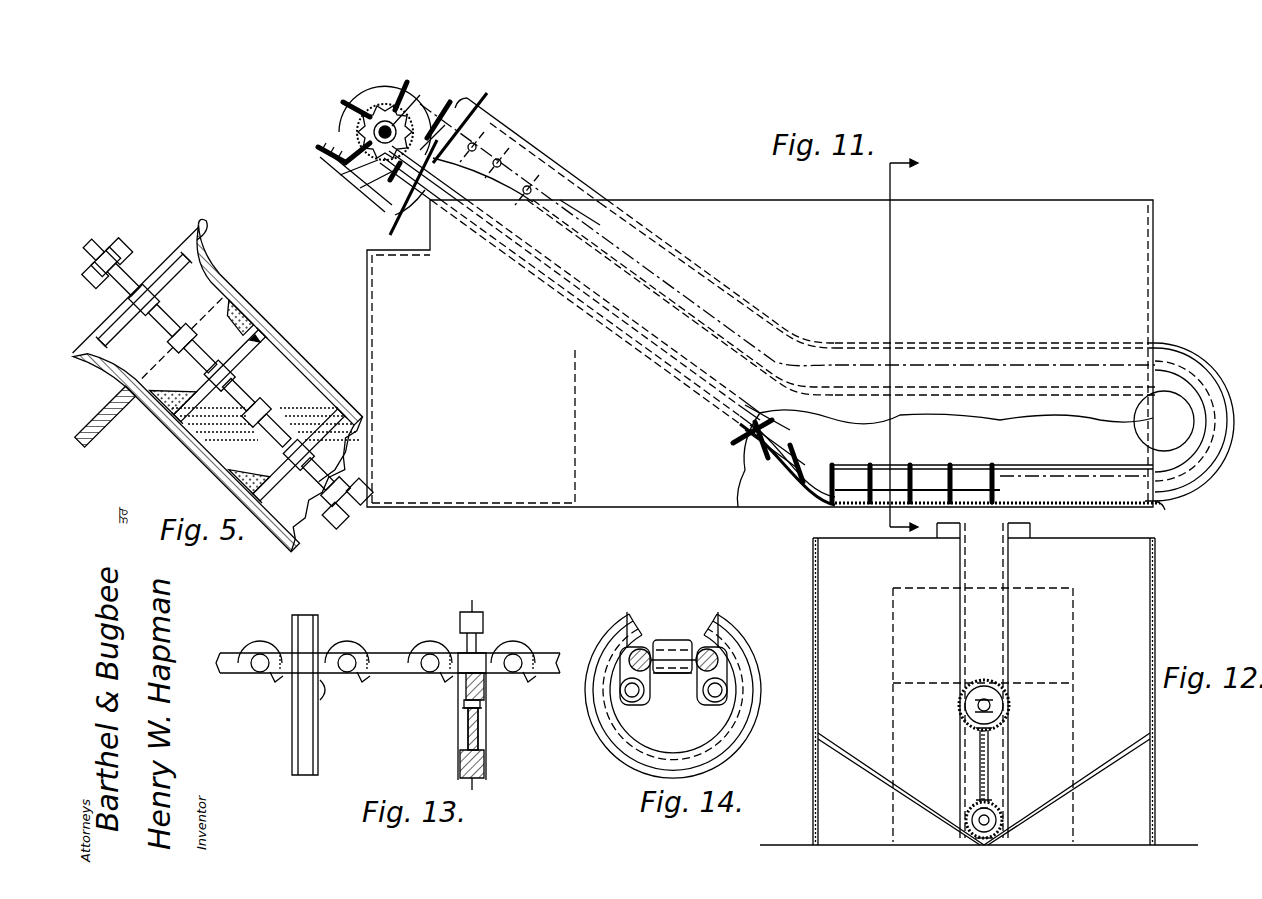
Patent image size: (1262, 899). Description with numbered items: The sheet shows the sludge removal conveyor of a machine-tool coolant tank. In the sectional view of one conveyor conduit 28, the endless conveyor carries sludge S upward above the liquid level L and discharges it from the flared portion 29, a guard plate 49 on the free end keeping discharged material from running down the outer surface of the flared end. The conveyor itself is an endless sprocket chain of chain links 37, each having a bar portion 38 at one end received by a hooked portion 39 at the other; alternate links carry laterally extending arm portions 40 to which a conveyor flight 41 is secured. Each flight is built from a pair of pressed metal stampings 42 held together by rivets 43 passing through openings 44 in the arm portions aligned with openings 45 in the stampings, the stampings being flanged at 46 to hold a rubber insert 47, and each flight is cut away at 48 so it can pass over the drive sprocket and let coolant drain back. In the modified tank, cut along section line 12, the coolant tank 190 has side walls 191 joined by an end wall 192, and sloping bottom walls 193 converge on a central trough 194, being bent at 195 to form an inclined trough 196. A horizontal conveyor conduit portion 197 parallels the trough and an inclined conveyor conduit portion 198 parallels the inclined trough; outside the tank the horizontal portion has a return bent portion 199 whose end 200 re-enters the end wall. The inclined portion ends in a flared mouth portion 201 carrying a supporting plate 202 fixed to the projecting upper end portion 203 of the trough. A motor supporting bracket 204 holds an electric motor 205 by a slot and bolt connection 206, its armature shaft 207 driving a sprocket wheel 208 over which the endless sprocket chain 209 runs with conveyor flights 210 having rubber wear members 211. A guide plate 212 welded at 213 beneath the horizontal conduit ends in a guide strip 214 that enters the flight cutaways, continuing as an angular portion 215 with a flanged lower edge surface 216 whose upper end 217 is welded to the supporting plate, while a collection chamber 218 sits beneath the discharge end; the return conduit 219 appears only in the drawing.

In FIG. 5, the conveyor conduit 28 is at (292, 338).
In FIG. 5, the flared portion 29 is at (224, 233).
In FIG. 5, the chain links 37 is at (124, 245).
In FIG. 13, the chain links 37 is at (390, 652).
In FIG. 14, the chain links 37 is at (640, 648).
In FIG. 5, the bar portion 38 is at (183, 297).
In FIG. 13, the bar portion 38 is at (428, 676).
In FIG. 14, the bar portion 38 is at (653, 650).
In FIG. 5, the hooked portion 39 is at (157, 255).
In FIG. 13, the hooked portion 39 is at (437, 642).
In FIG. 14, the hooked portion 39 is at (677, 640).
In FIG. 13, the laterally extending arm portions 40 is at (485, 675).
In FIG. 14, the laterally extending arm portions 40 is at (620, 690).
In FIG. 5, the conveyor flight 41 is at (256, 336).
In FIG. 13, the conveyor flight 41 is at (488, 732).
In FIG. 13, the pressed metal stampings 42 is at (468, 732).
In FIG. 14, the pressed metal stampings 42 is at (672, 707).
In FIG. 13, the rivets 43 is at (466, 692).
In FIG. 14, the rivets 43 is at (640, 700).
In FIG. 13, the openings 44 is at (482, 716).
In FIG. 13, the openings 45 is at (464, 714).
In FIG. 13, the flange 46 is at (460, 756).
In FIG. 14, the flange 46 is at (632, 750).
In FIG. 5, the rubber insert 47 is at (176, 432).
In FIG. 13, the rubber insert 47 is at (389, 691).
In FIG. 14, the rubber insert 47 is at (608, 740).
In FIG. 13, the cut away portion 48 is at (487, 632).
In FIG. 14, the cut away portion 48 is at (712, 620).
In FIG. 5, the guard plate 49 is at (95, 447).
In FIG. 5, the sludge S is at (158, 420).
In FIG. 5, the liquid level L is at (304, 400).
In FIG. 11, the section line 12— 12 is at (913, 345).
In FIG. 11, the coolant tank 190 is at (1158, 287).
In FIG. 12, the side walls 191 is at (818, 608).
In FIG. 11, the end wall 192 is at (1155, 320).
In FIG. 12, the sloping bottom walls 193 is at (860, 755).
In FIG. 11, the central trough 194 is at (1085, 505).
In FIG. 12, the central trough 194 is at (985, 845).
In FIG. 11, the bend 195 is at (790, 502).
In FIG. 11, the inclined trough 196 is at (743, 439).
In FIG. 11, the horizontal conveyor conduit portion 197 is at (978, 343).
In FIG. 12, the horizontal conveyor conduit portion 197 is at (1010, 705).
In FIG. 11, the inclined conveyor conduit portion 198 is at (723, 275).
In FIG. 12, the inclined conveyor conduit portion 198 is at (1010, 565).
In FIG. 11, the return bent portion 199 is at (1200, 462).
In FIG. 11, the end of return bent portion 200 is at (1155, 515).
In FIG. 11, the flared mouth portion 201 is at (485, 108).
In FIG. 11, the supporting plate 202 is at (440, 180).
In FIG. 11, the projecting upper end portion 203 is at (393, 245).
In FIG. 11, the motor supporting bracket 204 is at (318, 150).
In FIG. 11, the electric motor 205 is at (352, 128).
In FIG. 11, the slot and bolt connection 206 is at (328, 168).
In FIG. 11, the armature shaft 207 is at (412, 109).
In FIG. 11, the sprocket wheel 208 is at (375, 185).
In FIG. 11, the endless sprocket chain 209 is at (930, 465).
In FIG. 12, the endless sprocket chain 209 is at (985, 683).
In FIG. 11, the conveyor flights 210 is at (345, 112).
In FIG. 12, the conveyor flights 210 is at (965, 705).
In FIG. 11, the rubber wear members 211 is at (850, 462).
In FIG. 12, the rubber wear members 211 is at (995, 806).
In FIG. 11, the guide plate 212 is at (945, 458).
In FIG. 12, the guide plate 212 is at (990, 760).
In FIG. 12, the weld 213 is at (993, 738).
In FIG. 11, the guide strip 214 is at (1005, 465).
In FIG. 12, the guide strip 214 is at (992, 795).
In FIG. 11, the angular portion 215 is at (785, 395).
In FIG. 11, the flanged lower edge surface 216 is at (790, 438).
In FIG. 12, the flanged lower edge surface 216 is at (978, 750).
In FIG. 11, the upper end 217 is at (498, 190).
In FIG. 11, the collection chamber 218 is at (400, 503).
In FIG. 12, the collection chamber 218 is at (893, 670).
In FIG. 11, the return conduit 219 is at (550, 332).